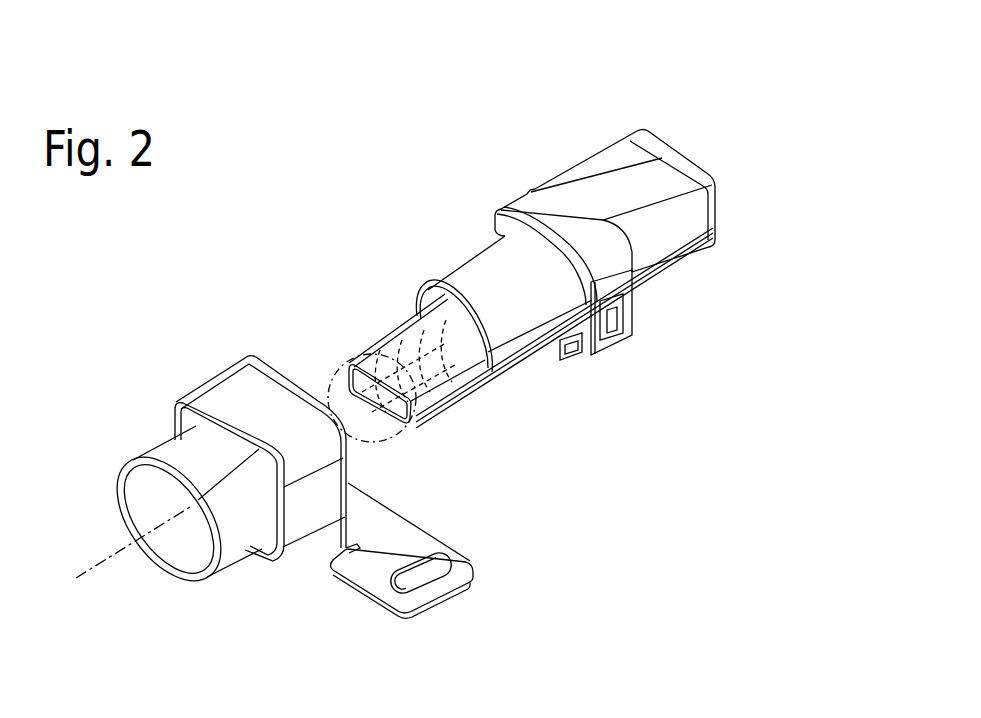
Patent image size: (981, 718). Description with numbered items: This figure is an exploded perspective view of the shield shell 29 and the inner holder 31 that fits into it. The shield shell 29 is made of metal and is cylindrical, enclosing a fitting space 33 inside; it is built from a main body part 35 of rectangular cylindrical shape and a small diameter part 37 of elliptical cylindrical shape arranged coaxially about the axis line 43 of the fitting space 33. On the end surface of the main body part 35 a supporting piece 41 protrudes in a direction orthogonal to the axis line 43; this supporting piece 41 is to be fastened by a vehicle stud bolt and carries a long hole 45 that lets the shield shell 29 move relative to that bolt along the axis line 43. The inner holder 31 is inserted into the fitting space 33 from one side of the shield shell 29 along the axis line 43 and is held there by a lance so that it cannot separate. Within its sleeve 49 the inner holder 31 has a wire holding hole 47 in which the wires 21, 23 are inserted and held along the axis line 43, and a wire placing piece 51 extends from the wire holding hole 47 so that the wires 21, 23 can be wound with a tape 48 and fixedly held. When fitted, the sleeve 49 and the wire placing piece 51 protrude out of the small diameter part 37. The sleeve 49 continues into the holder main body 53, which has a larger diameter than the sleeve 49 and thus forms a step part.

The wire 21 is at (328, 375).
The wire 23 is at (385, 432).
The shield shell 29 is at (183, 366).
The inner holder 31 is at (558, 142).
The fitting space 33 is at (193, 562).
The main body part 35 is at (217, 362).
The small diameter part 37 is at (163, 437).
The supporting piece 41 is at (438, 525).
The axis line 43 is at (80, 563).
The long hole 45 is at (408, 608).
The wire holding hole 47 is at (410, 322).
The tape 48 is at (436, 410).
The sleeve 49 is at (533, 360).
The wire placing piece 51 is at (452, 396).
The holder main body 53 is at (656, 153).